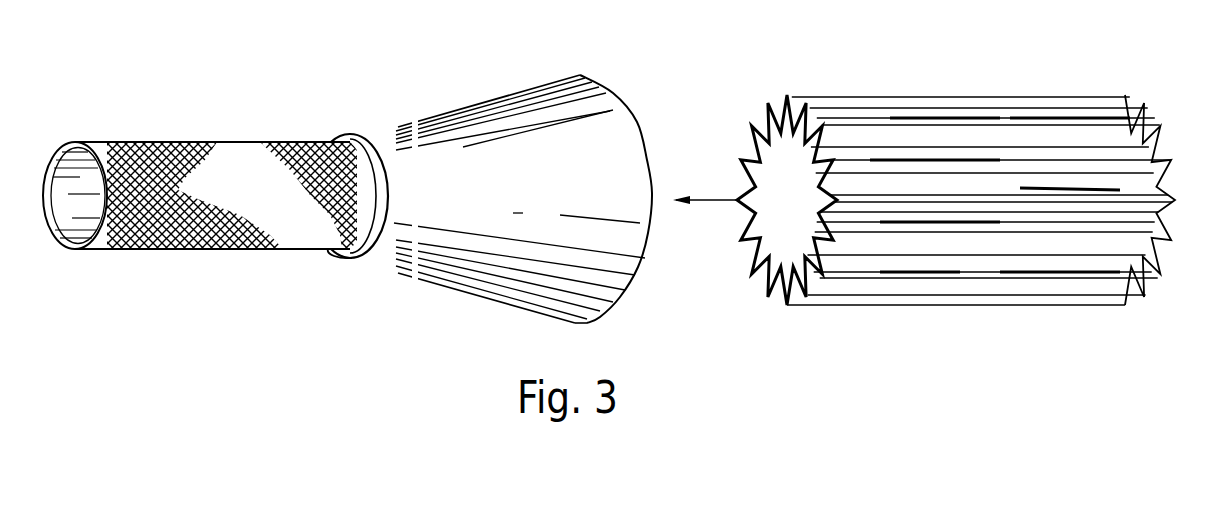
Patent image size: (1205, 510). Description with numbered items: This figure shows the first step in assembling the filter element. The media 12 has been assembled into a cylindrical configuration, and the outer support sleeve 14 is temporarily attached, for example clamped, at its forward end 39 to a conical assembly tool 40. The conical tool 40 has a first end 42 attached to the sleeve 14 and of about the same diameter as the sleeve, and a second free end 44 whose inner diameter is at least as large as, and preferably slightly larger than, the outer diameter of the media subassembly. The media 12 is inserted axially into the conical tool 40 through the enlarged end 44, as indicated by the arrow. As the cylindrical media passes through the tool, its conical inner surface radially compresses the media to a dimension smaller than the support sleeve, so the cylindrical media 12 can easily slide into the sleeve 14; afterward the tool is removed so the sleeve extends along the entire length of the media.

The media 12 is at (958, 97).
The outer support sleeve 14 is at (250, 146).
The forward end 39 is at (370, 256).
The conical assembly tool 40 is at (560, 78).
The first end 42 is at (370, 136).
The second free end 44 is at (620, 303).